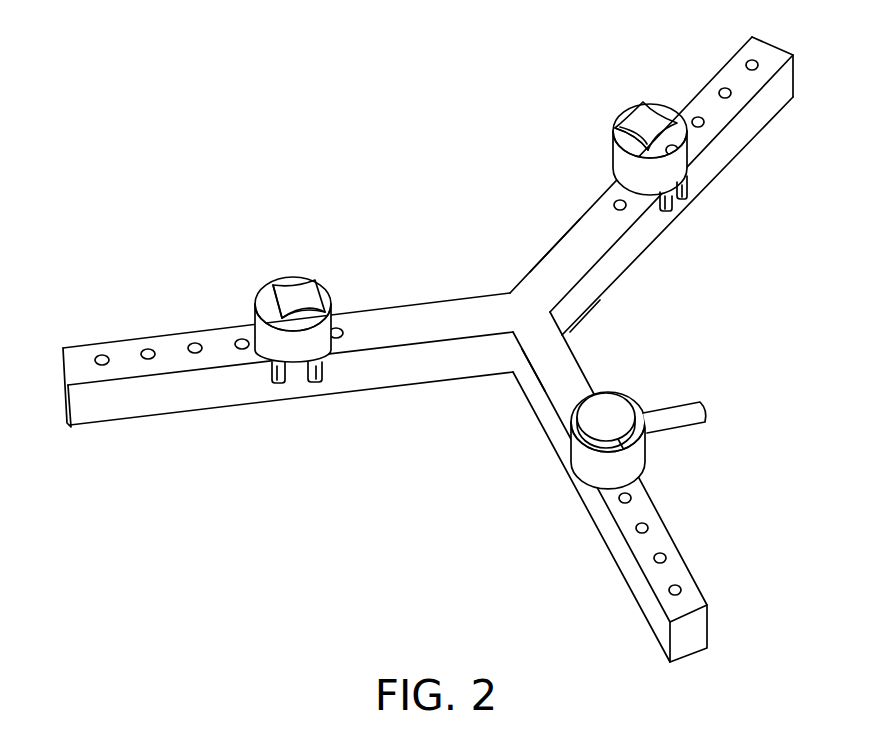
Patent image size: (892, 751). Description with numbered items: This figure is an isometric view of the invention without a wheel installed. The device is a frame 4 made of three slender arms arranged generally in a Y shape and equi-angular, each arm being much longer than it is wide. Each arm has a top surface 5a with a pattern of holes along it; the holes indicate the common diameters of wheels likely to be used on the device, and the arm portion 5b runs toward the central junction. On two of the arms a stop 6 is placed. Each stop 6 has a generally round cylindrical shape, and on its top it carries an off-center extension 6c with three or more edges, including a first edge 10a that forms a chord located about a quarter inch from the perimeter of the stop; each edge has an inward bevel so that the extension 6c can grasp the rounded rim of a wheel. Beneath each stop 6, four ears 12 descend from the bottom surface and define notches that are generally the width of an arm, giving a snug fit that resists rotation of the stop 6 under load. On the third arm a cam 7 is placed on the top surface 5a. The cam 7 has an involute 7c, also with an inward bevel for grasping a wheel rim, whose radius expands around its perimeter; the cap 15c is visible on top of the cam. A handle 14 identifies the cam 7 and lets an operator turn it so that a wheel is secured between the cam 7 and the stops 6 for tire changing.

The frame 4 is at (417, 280).
The top surface 5a is at (122, 353).
The arm portion near junction 5b is at (553, 270).
The stop 6 is at (258, 272).
The extension 6c is at (299, 296).
The first edge 10a is at (318, 291).
The ears 12 is at (280, 383).
The cam 7 is at (595, 472).
The involute 7c is at (618, 415).
The cap disc 15c is at (607, 400).
The handle 14 is at (707, 410).